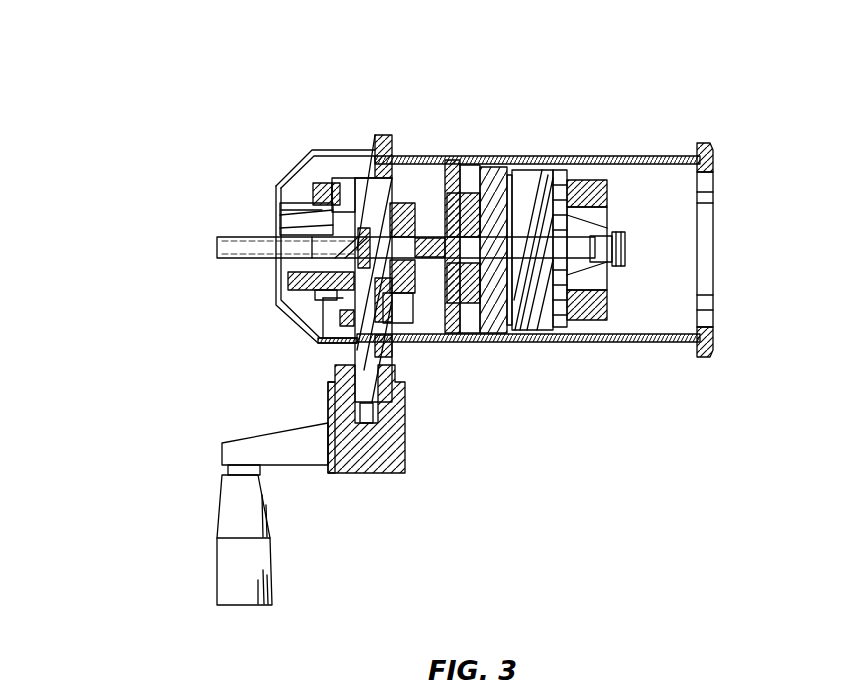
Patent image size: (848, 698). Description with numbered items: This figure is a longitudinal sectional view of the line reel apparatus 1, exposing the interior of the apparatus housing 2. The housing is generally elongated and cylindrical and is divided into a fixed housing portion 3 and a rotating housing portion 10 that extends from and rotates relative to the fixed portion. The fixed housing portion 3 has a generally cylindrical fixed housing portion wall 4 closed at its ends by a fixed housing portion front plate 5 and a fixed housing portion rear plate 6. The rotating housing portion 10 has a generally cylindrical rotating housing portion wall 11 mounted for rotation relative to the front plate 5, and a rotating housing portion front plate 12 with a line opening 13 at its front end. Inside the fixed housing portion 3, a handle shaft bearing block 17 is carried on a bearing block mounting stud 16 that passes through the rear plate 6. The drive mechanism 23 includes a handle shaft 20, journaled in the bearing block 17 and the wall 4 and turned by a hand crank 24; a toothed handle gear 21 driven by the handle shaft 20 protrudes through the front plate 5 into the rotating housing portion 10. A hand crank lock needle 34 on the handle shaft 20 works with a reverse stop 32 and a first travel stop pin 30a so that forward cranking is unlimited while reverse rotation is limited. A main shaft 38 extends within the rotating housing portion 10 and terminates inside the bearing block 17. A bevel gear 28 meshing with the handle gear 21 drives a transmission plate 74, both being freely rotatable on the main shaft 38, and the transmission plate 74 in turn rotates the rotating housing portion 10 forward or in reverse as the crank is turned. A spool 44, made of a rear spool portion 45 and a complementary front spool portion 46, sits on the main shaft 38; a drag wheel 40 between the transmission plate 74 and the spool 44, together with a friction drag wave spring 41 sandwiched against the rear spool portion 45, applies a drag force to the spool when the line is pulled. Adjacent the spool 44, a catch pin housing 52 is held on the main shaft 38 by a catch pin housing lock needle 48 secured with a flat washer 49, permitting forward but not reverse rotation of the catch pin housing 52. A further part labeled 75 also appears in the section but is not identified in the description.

The line reel apparatus 1 is at (273, 82).
The apparatus housing 2 is at (270, 210).
The fixed housing portion 3 is at (272, 225).
The fixed housing portion wall 4 is at (368, 175).
The fixed housing portion front plate 5 is at (396, 398).
The fixed housing portion rear plate 6 is at (278, 178).
The rotating housing portion 10 is at (628, 150).
The rotating housing portion wall 11 is at (609, 156).
The rotating housing portion front plate 12 is at (713, 152).
The line opening 13 is at (708, 203).
The bearing block mounting stud 16 is at (216, 250).
The handle shaft bearing block 17 is at (320, 203).
The handle shaft 20 is at (340, 386).
The handle gear 21 is at (315, 293).
The drive mechanism 23 is at (213, 575).
The hand crank 24 is at (248, 575).
The bevel gear 28 is at (458, 160).
The first travel stop pin 30a is at (348, 203).
The reverse stop 32 is at (333, 203).
The hand crank lock needle 34 is at (403, 140).
The main shaft 38 is at (592, 200).
The drag wheel 40 is at (485, 330).
The friction drag wave spring 41 is at (507, 170).
The spool 44 is at (531, 348).
The rear spool portion 45 is at (505, 335).
The front spool portion 46 is at (548, 325).
The catch pin housing lock needle 48 is at (600, 272).
The flat washer 49 is at (620, 222).
The catch pin housing 52 is at (603, 318).
The transmission plate 74 is at (472, 165).
The bearing 75 is at (455, 298).